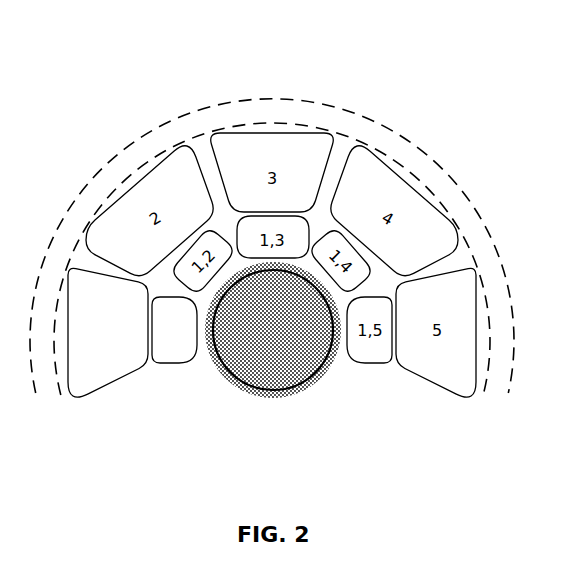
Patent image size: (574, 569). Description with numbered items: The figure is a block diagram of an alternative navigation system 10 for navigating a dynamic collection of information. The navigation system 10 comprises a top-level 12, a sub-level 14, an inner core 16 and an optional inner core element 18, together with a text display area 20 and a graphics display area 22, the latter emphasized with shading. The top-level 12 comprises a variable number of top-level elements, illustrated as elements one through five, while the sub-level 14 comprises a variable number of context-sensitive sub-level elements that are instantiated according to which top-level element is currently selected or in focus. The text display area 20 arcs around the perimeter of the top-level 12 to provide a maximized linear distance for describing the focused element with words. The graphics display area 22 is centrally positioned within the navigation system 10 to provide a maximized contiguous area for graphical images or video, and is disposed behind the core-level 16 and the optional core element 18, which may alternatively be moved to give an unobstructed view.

The navigation system 10 is at (190, 48).
The top-level 12 is at (108, 399).
The sub-level 14 is at (175, 377).
The inner core 16 is at (273, 330).
The inner core element 18 is at (273, 330).
The text display area 20 is at (268, 118).
The graphics display area 22 is at (273, 374).